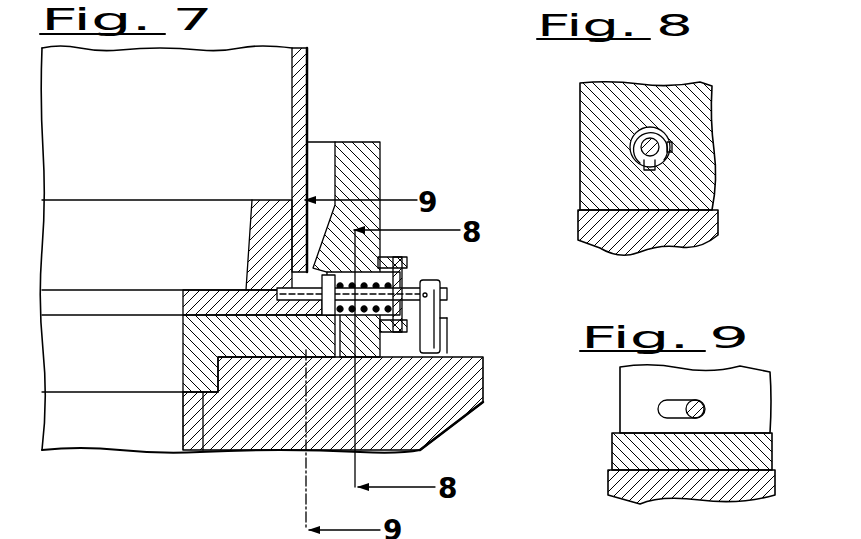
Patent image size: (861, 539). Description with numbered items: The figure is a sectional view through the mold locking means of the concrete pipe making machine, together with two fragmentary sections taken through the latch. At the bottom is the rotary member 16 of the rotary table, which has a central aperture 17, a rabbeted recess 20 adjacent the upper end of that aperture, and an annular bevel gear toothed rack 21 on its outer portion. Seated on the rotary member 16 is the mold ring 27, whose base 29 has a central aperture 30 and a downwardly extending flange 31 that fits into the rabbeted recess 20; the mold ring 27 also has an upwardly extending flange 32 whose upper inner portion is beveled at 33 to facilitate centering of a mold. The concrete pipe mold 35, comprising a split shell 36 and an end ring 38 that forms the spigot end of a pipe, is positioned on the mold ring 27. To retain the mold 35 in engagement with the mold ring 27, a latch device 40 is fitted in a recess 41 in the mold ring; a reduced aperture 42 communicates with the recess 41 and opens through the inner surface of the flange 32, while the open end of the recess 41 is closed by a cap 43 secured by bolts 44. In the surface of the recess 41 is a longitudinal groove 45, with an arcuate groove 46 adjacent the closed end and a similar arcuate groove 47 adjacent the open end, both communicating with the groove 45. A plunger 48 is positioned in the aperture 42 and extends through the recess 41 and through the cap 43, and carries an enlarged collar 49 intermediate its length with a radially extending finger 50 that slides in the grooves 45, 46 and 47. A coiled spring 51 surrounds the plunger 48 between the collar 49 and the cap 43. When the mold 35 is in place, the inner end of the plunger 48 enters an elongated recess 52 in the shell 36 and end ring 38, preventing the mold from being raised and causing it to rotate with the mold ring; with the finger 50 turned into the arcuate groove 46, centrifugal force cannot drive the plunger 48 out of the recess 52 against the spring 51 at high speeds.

In FIG. 7, the rotary member 16 is at (468, 390).
In FIG. 8, the rotary member 16 is at (716, 226).
In FIG. 9, the rotary member 16 is at (758, 490).
In FIG. 7, the central aperture 17 is at (178, 435).
In FIG. 7, the rabbeted recess 20 is at (203, 450).
In FIG. 7, the annular bevel gear toothed rack 21 is at (462, 420).
In FIG. 7, the mold ring 27 is at (382, 160).
In FIG. 8, the mold ring 27 is at (680, 92).
In FIG. 9, the mold ring 27 is at (760, 456).
In FIG. 7, the base 29 is at (280, 345).
In FIG. 7, the central aperture 30 is at (183, 335).
In FIG. 7, the downwardly extending flange 31 is at (192, 373).
In FIG. 7, the upwardly extending flange 32 is at (365, 142).
In FIG. 7, the bevel 33 is at (327, 232).
In FIG. 7, the concrete pipe mold 35 is at (309, 68).
In FIG. 9, the concrete pipe mold 35 is at (757, 398).
In FIG. 7, the split shell 36 is at (305, 92).
In FIG. 7, the end ring 38 is at (268, 200).
In FIG. 7, the latch device 40 is at (445, 290).
In FIG. 7, the recess 41 is at (380, 262).
In FIG. 8, the recess 41 is at (668, 136).
In FIG. 7, the aperture 42 is at (300, 275).
In FIG. 7, the cap 43 is at (432, 346).
In FIG. 7, the bolts 44 is at (402, 262).
In FIG. 8, the longitudinal groove 45 is at (672, 147).
In FIG. 7, the arcuate groove 46 is at (322, 330).
In FIG. 7, the arcuate groove 47 is at (380, 340).
In FIG. 8, the arcuate groove 47 is at (670, 163).
In FIG. 7, the plunger 48 is at (412, 290).
In FIG. 8, the plunger 48 is at (645, 147).
In FIG. 9, the plunger 48 is at (703, 402).
In FIG. 8, the enlarged collar 49 is at (640, 133).
In FIG. 7, the finger 50 is at (338, 330).
In FIG. 8, the finger 50 is at (648, 160).
In FIG. 7, the coiled spring 51 is at (412, 285).
In FIG. 7, the elongated recess 52 is at (292, 285).
In FIG. 9, the elongated recess 52 is at (660, 408).